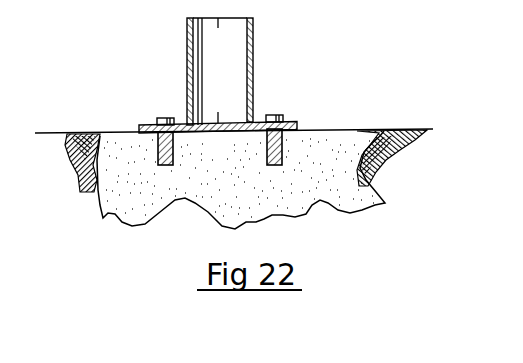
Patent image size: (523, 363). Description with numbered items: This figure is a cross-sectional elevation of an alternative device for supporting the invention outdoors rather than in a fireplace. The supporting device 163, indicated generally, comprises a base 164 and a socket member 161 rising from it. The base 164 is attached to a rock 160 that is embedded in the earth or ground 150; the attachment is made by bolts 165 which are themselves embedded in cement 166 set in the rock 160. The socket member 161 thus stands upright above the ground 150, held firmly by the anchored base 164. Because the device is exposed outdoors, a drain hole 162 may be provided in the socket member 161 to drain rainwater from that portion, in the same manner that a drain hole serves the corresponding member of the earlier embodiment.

The ground 150 is at (403, 129).
The rock 160 is at (331, 131).
The socket member 161 is at (253, 61).
The drain hole 162 is at (253, 119).
The supporting device 163 is at (273, 71).
The base 164 is at (182, 125).
The bolts 165 is at (159, 118).
The cement 166 is at (157, 148).